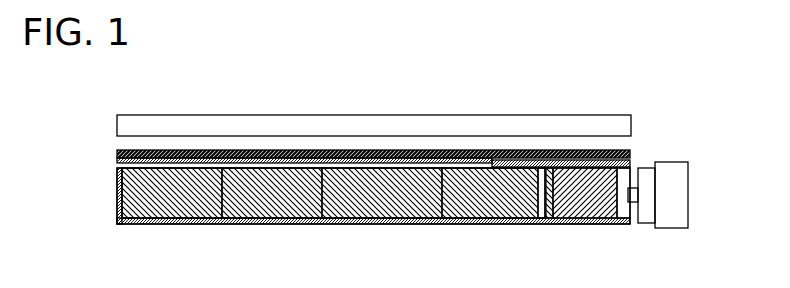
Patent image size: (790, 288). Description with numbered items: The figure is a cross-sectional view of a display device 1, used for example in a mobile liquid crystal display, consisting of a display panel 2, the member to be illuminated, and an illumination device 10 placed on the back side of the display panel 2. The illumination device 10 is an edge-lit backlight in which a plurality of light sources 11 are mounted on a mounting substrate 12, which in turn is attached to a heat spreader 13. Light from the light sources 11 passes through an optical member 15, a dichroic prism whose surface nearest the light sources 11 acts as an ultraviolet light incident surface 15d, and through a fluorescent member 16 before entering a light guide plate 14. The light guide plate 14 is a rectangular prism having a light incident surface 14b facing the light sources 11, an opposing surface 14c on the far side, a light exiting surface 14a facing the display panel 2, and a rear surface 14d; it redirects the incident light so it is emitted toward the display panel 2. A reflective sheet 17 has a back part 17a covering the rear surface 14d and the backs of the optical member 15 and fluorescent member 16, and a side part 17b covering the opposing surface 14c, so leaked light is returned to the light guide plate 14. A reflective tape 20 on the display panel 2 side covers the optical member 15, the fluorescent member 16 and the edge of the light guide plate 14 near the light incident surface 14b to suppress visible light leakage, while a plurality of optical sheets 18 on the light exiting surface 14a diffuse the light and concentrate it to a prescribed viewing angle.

The display device 1 is at (712, 95).
The display panel 2 is at (637, 128).
The illumination device 10 is at (702, 195).
The light sources 11 is at (632, 203).
The mounting substrate 12 is at (645, 214).
The heat spreader 13 is at (672, 213).
The light guide plate 14 is at (333, 223).
The light exiting surface 14a is at (355, 166).
The light incident surface 14b is at (540, 203).
The opposing surface 14c is at (120, 191).
The rear surface 14d is at (246, 218).
The optical member 15 is at (585, 212).
The ultraviolet light incident surface 15d is at (617, 203).
The fluorescent member 16 is at (548, 225).
The reflective sheet 17 is at (345, 224).
The back part 17a is at (288, 225).
The side part 17b is at (117, 212).
The optical sheets 18 is at (117, 152).
The reflective tape 20 is at (635, 167).